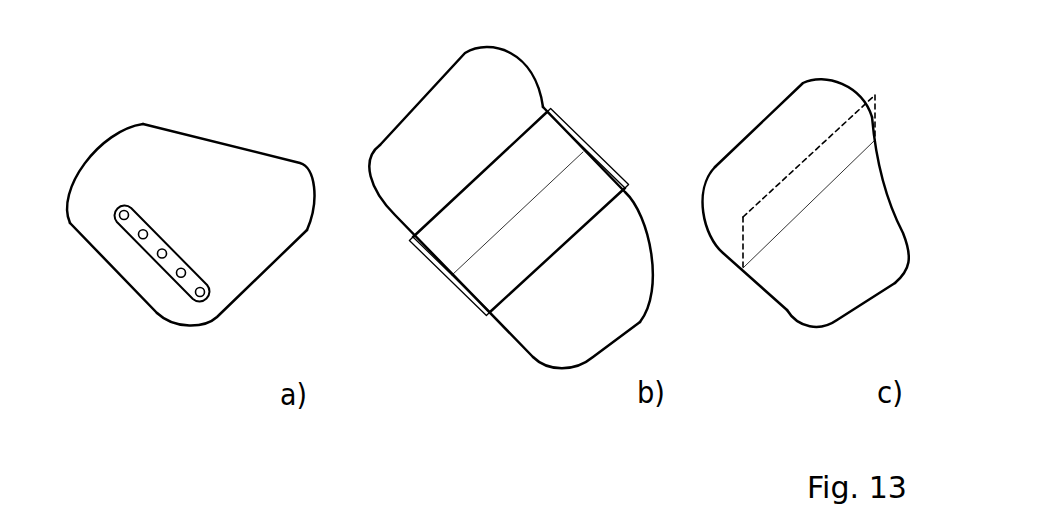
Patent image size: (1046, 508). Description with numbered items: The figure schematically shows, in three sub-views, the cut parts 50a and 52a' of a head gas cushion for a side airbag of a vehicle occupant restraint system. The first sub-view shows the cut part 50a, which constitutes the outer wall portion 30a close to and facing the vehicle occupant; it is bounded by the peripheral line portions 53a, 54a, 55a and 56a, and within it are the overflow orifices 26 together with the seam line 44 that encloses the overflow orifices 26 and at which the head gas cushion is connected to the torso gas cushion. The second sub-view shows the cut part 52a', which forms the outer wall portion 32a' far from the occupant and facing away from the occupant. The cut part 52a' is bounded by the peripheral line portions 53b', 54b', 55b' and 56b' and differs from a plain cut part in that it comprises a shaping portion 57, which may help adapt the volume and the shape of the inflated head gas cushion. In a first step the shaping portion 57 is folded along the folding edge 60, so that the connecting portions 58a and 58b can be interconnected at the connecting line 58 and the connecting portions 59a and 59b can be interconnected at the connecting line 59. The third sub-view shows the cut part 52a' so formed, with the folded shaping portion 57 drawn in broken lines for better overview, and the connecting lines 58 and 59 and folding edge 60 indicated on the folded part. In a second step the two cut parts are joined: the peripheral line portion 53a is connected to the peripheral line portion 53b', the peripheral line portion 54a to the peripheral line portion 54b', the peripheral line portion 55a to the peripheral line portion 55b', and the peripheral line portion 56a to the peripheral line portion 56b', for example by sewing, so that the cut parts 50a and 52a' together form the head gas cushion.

The overflow orifices 26 is at (184, 273).
The seam line 44 is at (212, 288).
The outer wall portion 30a is at (184, 209).
The cut part 50a is at (229, 195).
The peripheral line portion 53a is at (194, 130).
The peripheral line portion 54a is at (113, 140).
The peripheral line portion 55a is at (118, 282).
The peripheral line portion 56a is at (248, 295).
The outer wall portion 32a' is at (651, 243).
The cut part 52a' is at (651, 243).
The peripheral line portion 53b' is at (751, 193).
The peripheral line portion 54b' is at (735, 383).
The peripheral line portion 55b' is at (563, 284).
The peripheral line portion 56b' is at (606, 94).
The shaping portion 57 is at (500, 188).
The connecting line 58 is at (743, 241).
The connecting portion 58a is at (439, 286).
The connecting portion 58b is at (468, 302).
The connecting line 59 is at (876, 108).
The connecting portion 59a is at (599, 137).
The connecting portion 59b is at (609, 168).
The folding edge 60 is at (530, 205).